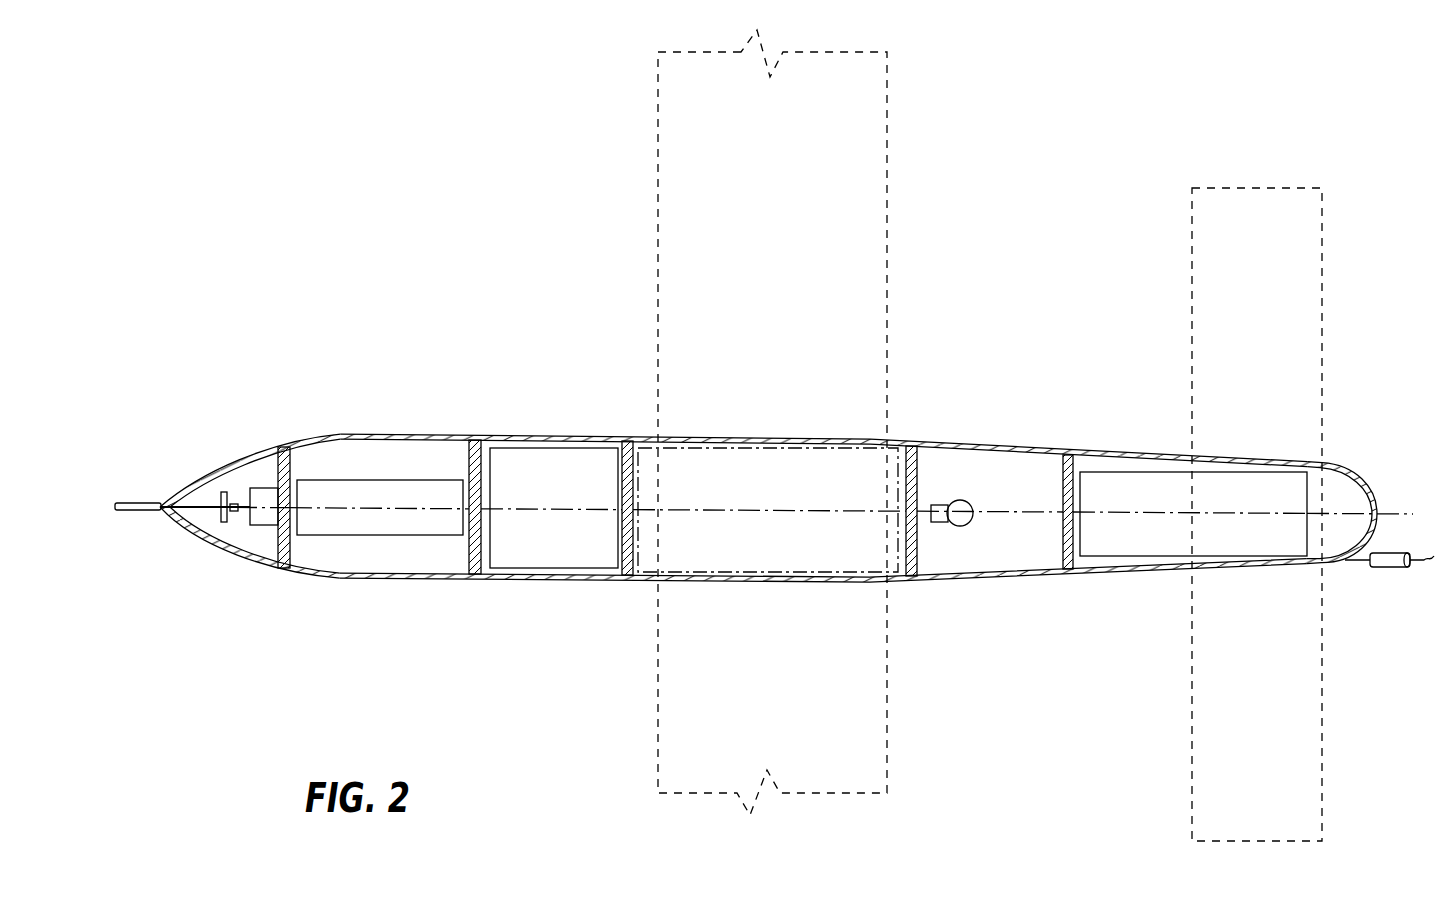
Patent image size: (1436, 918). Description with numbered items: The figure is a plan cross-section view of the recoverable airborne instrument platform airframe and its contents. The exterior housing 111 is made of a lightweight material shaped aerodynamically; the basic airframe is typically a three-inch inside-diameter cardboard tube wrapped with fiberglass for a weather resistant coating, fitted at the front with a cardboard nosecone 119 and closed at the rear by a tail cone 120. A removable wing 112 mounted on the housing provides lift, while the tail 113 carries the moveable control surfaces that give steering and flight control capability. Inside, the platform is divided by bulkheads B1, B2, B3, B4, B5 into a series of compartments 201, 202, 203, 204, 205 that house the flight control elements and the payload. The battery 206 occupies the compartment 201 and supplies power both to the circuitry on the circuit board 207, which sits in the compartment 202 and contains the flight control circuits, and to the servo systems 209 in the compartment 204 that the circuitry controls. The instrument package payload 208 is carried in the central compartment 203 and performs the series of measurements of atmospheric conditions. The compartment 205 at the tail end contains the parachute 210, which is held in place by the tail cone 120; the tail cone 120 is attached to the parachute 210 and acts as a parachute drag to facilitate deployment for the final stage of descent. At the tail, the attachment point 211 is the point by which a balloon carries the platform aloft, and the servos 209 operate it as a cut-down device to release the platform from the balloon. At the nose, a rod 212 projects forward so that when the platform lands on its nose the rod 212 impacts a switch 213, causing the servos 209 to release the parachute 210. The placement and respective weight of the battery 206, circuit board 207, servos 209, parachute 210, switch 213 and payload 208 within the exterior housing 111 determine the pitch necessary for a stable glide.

The exterior housing 111 is at (447, 432).
The removable wing 112 is at (888, 315).
The tail 113 is at (1190, 697).
The nosecone 119 is at (255, 446).
The tail cone 120 is at (1335, 467).
The compartment 201 is at (363, 447).
The compartment 202 is at (545, 443).
The compartment 203 is at (743, 443).
The compartment 204 is at (997, 457).
The compartment 205 is at (1113, 463).
The battery 206 is at (385, 479).
The circuit board 207 is at (573, 448).
The instrument package payload 208 is at (807, 448).
The servo systems 209 is at (935, 504).
The parachute 210 is at (1110, 556).
The attachment point / cut-down device 211 is at (1387, 567).
The rod 212 is at (113, 502).
The switch 213 is at (252, 487).
The bulkhead B1 is at (281, 447).
The bulkhead B2 is at (470, 441).
The bulkhead B3 is at (628, 441).
The bulkhead B4 is at (917, 578).
The bulkhead B5 is at (1070, 569).